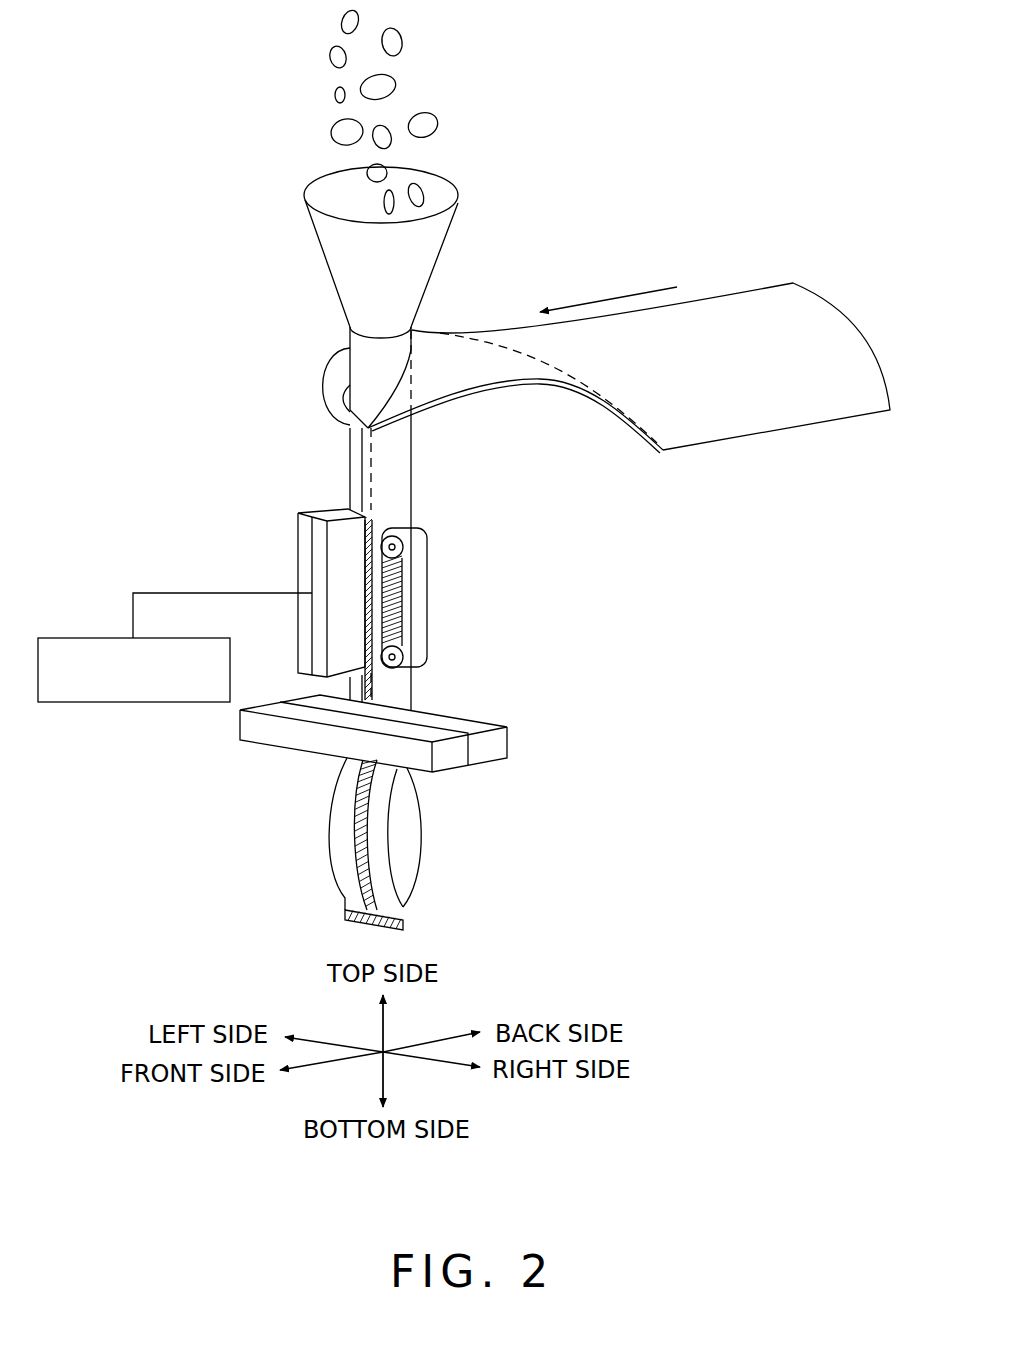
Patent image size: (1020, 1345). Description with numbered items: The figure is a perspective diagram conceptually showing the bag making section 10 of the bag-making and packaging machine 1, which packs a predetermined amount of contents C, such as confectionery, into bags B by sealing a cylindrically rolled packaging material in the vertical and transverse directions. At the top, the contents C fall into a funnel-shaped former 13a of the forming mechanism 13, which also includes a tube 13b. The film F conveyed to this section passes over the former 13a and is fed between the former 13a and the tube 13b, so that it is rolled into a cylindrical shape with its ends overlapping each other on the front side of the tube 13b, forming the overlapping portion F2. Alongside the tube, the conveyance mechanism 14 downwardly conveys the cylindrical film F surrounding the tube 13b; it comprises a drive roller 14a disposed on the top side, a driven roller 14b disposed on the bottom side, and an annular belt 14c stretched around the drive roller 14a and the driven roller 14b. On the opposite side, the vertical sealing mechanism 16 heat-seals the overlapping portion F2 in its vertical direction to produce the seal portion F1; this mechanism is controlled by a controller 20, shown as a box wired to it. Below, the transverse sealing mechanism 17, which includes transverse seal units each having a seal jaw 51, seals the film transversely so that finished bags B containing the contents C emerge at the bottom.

The bag-making and packaging machine 1 is at (673, 617).
The bag making section 10 is at (512, 250).
The forming mechanism 13 is at (637, 463).
The former 13a is at (520, 383).
The tube 13b is at (380, 387).
The conveyance mechanism 14 is at (494, 601).
The drive roller 14a is at (392, 547).
The driven roller 14b is at (392, 657).
The belt 14c is at (420, 615).
The vertical sealing mechanism 16 is at (302, 550).
The transverse sealing mechanism 17 is at (464, 774).
The seal jaw 51 is at (297, 735).
The controller 20 is at (132, 703).
The bag B is at (403, 843).
The contents C is at (295, 5).
The film F is at (735, 317).
The seal portion F1 is at (367, 693).
The overlapping portion F2 is at (362, 455).